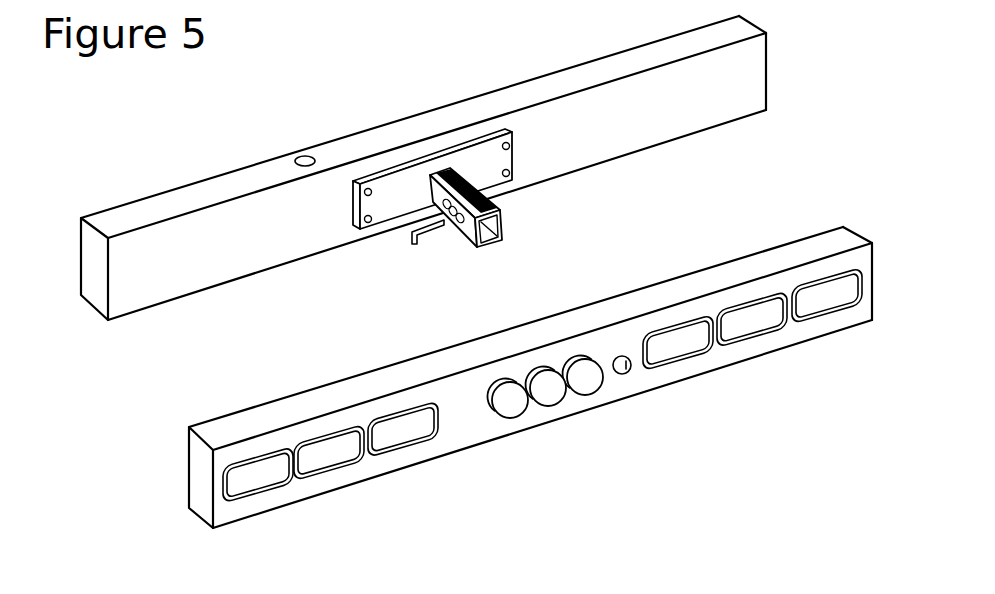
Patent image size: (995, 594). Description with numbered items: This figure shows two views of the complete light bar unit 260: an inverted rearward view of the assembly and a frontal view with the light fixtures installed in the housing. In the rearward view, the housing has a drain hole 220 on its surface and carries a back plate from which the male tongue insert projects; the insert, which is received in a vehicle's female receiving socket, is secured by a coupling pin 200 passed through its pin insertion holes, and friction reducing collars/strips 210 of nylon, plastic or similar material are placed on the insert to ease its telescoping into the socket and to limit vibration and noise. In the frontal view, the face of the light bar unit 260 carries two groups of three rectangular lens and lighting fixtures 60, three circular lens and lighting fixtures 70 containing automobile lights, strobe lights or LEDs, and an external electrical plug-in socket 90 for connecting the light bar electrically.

The rectangular lens and lighting fixture 60 is at (334, 485).
The circular lens and lighting fixture 70 is at (554, 422).
The external electrical plug-in socket 90 is at (624, 390).
The coupling pin 200 is at (430, 248).
The collars/strips 210 is at (491, 200).
The drain hole 220 is at (305, 139).
The complete light bar unit 260 is at (455, 470).